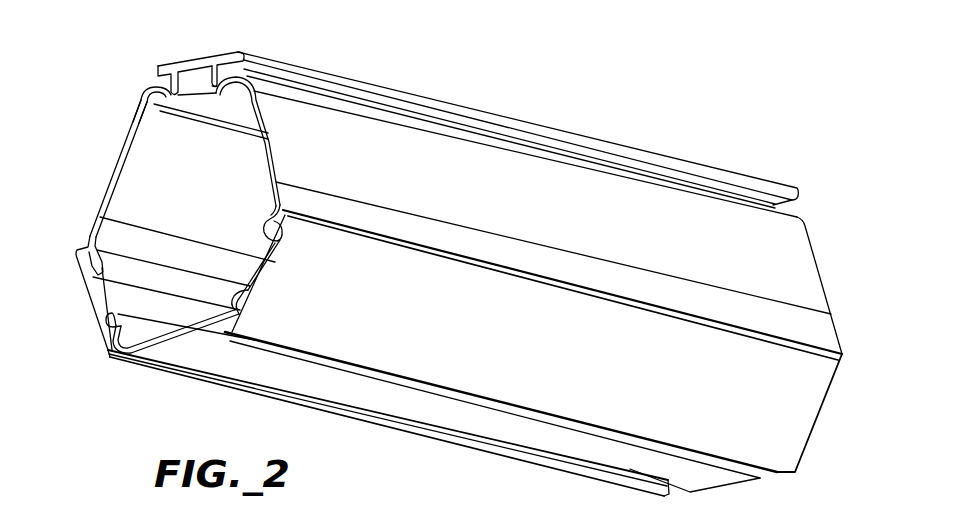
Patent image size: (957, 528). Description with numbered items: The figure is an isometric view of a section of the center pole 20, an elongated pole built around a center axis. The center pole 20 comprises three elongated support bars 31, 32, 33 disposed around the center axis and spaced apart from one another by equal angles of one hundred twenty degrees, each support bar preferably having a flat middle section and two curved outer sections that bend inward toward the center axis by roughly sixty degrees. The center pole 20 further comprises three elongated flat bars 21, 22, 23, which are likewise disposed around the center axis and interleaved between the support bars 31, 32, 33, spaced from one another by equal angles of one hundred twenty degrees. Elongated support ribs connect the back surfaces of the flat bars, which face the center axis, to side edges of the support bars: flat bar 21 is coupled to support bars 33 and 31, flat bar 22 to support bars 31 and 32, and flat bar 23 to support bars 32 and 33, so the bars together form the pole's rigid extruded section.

The center pole 20 is at (131, 426).
The flat bar 21 is at (92, 298).
The flat bar 22 is at (322, 333).
The flat bar 23 is at (200, 52).
The support bar 31 is at (222, 356).
The support bar 32 is at (340, 120).
The support bar 33 is at (125, 143).